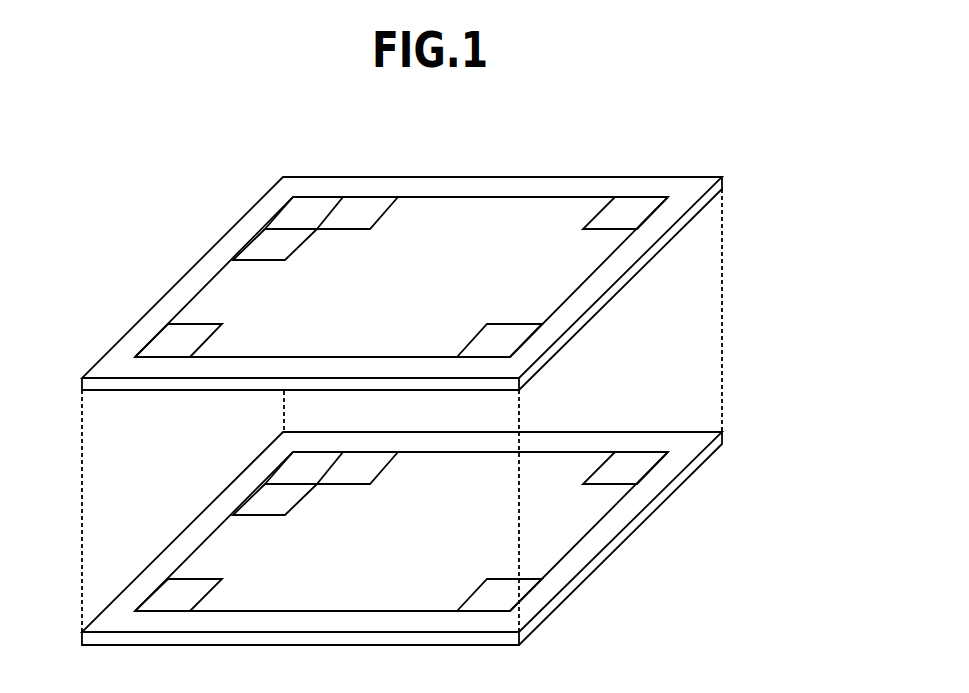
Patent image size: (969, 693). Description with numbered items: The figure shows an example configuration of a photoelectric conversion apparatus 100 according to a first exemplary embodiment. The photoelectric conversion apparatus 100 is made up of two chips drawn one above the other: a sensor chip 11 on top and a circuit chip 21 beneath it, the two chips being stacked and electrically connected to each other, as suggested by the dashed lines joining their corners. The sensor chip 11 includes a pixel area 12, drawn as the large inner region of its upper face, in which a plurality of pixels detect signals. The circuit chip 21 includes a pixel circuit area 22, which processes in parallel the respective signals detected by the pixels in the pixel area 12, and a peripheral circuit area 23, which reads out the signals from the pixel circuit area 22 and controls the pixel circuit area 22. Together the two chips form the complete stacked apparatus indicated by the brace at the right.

The photoelectric conversion apparatus 100 is at (810, 238).
The sensor chip 11 is at (655, 258).
The pixel area 12 is at (228, 297).
The circuit chip 21 is at (658, 507).
The pixel circuit area 22 is at (232, 543).
The peripheral circuit area 23 is at (143, 593).